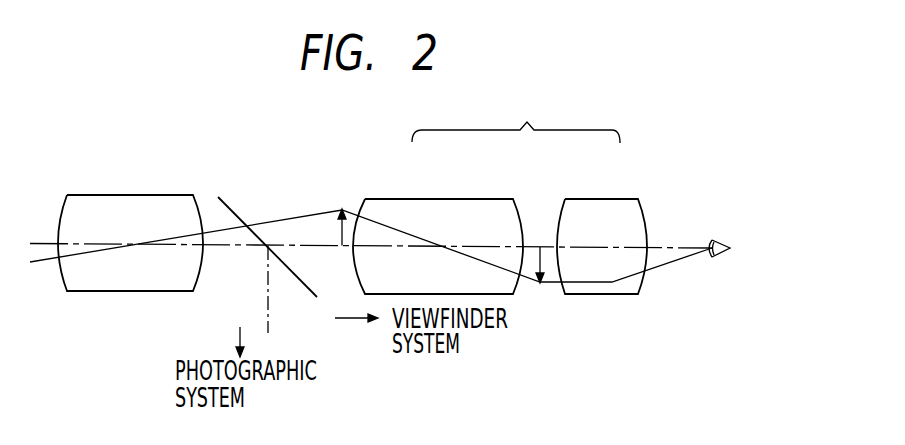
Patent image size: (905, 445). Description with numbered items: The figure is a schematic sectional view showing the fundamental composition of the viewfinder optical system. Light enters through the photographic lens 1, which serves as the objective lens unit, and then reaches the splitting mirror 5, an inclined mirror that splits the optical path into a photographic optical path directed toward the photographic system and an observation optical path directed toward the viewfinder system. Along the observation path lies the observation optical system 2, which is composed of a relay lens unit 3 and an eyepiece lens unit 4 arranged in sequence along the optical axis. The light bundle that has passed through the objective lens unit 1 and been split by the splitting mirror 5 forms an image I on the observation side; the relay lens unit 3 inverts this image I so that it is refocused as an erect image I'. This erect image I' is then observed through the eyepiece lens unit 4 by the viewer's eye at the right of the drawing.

The photographic lens 1 is at (162, 203).
The observation optical system 2 is at (500, 194).
The relay lens unit 3 is at (417, 210).
The eyepiece lens unit 4 is at (602, 212).
The splitting mirror 5 is at (236, 208).
The image I is at (329, 207).
The erect image I' is at (547, 290).